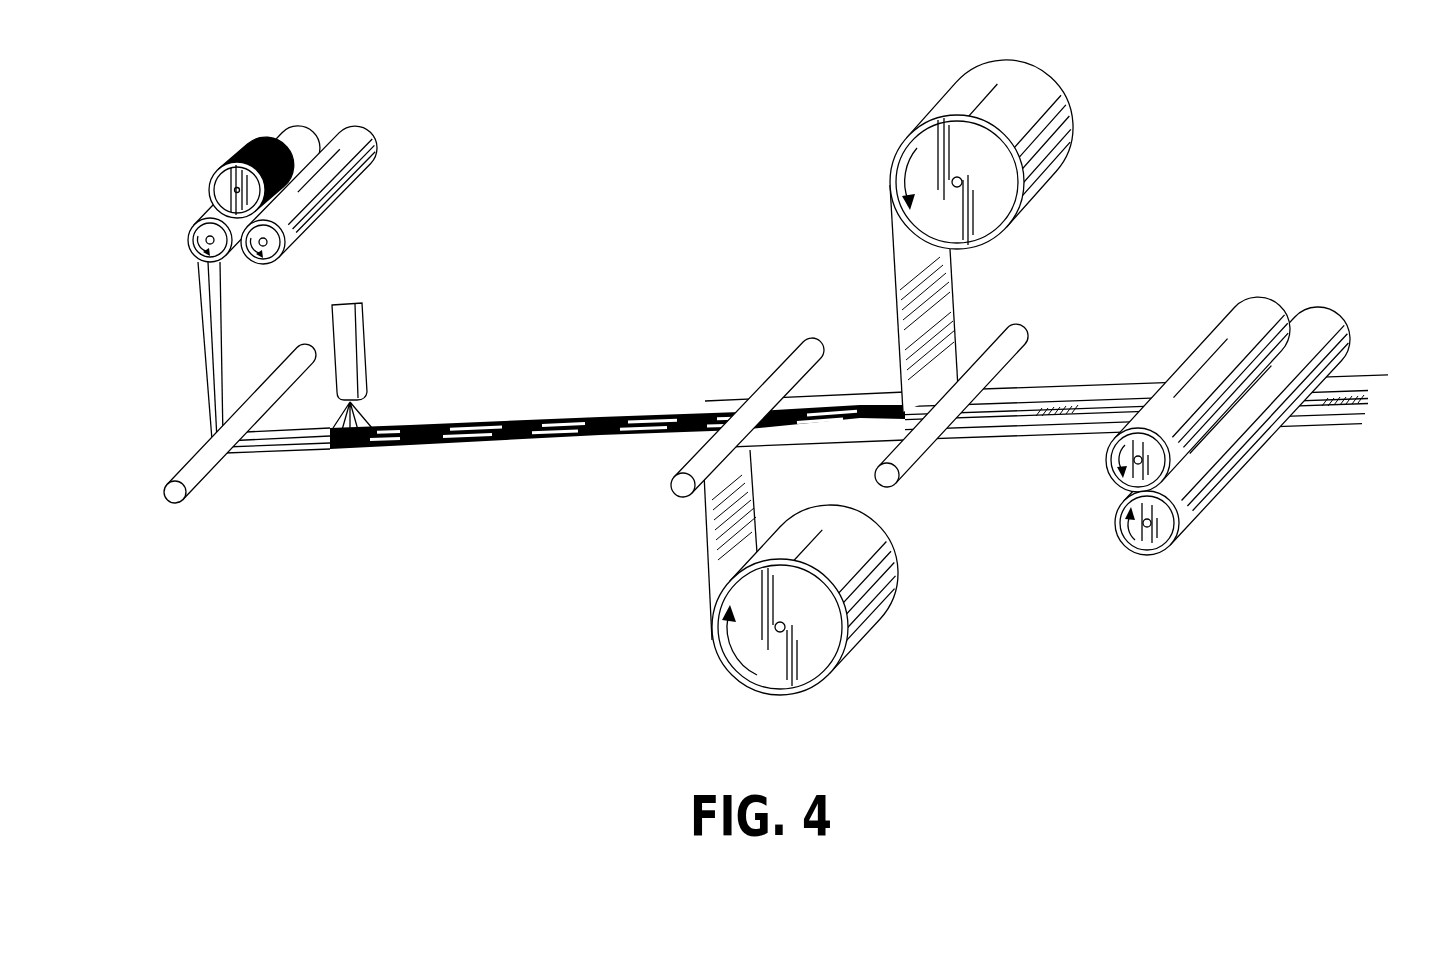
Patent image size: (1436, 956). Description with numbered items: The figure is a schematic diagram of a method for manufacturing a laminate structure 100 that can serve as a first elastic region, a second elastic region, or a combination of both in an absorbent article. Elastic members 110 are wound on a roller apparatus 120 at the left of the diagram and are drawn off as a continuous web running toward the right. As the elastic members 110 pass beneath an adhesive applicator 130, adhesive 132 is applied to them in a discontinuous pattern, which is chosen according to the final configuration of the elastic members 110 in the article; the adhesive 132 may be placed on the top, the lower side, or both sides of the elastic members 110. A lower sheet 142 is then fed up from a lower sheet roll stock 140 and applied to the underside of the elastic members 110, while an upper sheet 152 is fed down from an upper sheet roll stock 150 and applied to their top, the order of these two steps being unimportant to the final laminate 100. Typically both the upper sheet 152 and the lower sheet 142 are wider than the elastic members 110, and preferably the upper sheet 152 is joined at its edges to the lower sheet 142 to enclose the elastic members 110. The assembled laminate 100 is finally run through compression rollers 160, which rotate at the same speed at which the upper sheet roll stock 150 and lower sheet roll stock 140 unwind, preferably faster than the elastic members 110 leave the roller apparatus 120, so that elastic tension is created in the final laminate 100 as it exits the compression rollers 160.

The laminate structure 100 is at (1310, 420).
The elastic members 110 is at (203, 330).
The roller apparatus 120 is at (303, 212).
The adhesive applicator 130 is at (357, 380).
The adhesive 132 is at (343, 447).
The lower sheet roll stock 140 is at (767, 695).
The lower sheet 142 is at (707, 543).
The upper sheet roll stock 150 is at (1027, 197).
The upper sheet 152 is at (957, 303).
The compression rollers 160 is at (1107, 477).